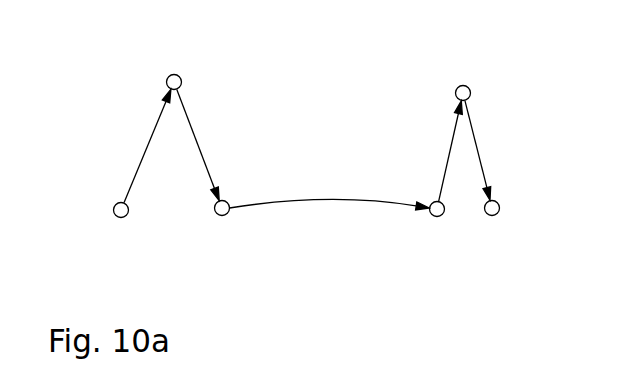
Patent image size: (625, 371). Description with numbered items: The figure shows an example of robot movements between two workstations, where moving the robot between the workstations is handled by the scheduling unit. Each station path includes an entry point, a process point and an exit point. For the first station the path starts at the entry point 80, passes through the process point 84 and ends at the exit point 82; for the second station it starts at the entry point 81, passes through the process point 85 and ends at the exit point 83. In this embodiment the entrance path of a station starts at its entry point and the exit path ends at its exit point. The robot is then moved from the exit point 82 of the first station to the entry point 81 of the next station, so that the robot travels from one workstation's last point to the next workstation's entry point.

The entry point 80 is at (123, 216).
The entry point 81 is at (439, 216).
The exit point 82 is at (225, 214).
The exit point 83 is at (493, 215).
The process point 84 is at (177, 79).
The process point 85 is at (466, 88).